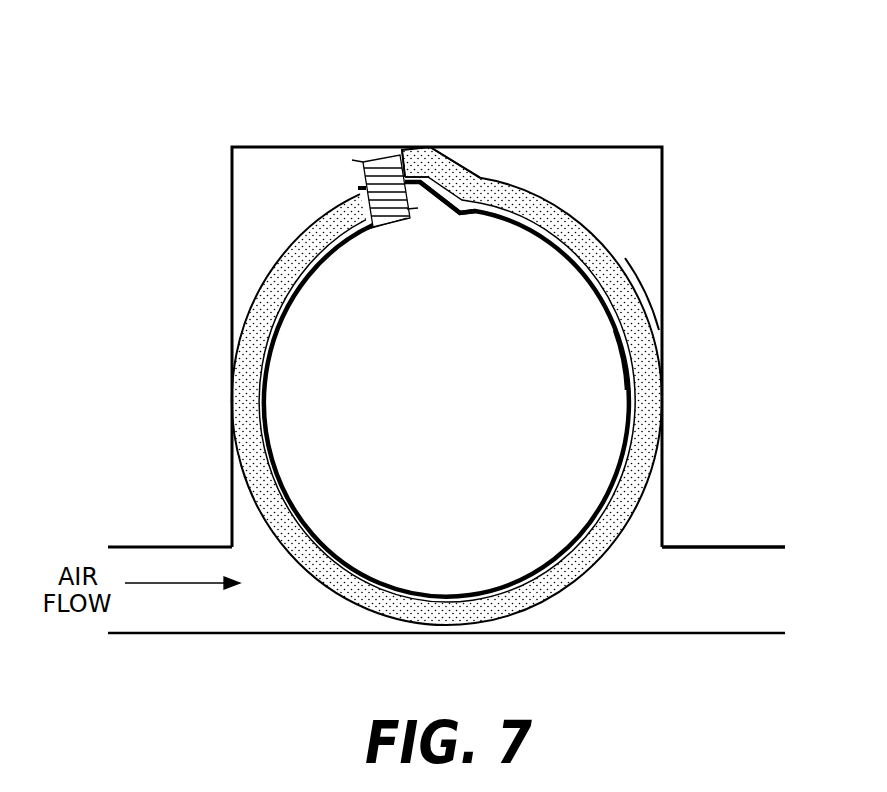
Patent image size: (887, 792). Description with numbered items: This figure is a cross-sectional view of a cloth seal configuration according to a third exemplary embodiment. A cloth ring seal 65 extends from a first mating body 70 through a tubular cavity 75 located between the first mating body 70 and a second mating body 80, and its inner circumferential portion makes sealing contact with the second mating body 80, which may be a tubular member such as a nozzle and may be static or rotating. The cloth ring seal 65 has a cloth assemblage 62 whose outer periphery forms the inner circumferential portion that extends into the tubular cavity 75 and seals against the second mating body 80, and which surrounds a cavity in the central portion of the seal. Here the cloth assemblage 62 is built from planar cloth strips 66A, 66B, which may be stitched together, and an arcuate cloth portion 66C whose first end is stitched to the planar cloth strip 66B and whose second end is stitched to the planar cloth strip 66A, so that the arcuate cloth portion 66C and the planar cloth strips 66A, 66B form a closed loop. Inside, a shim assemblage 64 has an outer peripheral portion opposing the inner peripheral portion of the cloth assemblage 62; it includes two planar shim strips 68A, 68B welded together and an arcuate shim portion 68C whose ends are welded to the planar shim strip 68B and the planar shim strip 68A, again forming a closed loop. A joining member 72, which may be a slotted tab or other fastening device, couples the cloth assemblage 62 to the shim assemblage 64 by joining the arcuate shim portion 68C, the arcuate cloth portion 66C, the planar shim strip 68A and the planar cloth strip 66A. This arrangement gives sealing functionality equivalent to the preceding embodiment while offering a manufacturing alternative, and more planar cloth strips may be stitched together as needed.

The cloth assemblage 62 is at (278, 306).
The shim assemblage 64 is at (266, 409).
The cloth ring seal 65 is at (294, 249).
The planar cloth strip 66A is at (418, 147).
The planar cloth strip 66B is at (466, 180).
The arcuate cloth portion 66C is at (648, 300).
The planar shim strip 68A is at (432, 177).
The planar shim strip 68B is at (465, 210).
The arcuate shim portion 68C is at (628, 366).
The first mating body 70 is at (662, 220).
The joining member 72 is at (366, 150).
The tubular cavity 75 is at (710, 576).
The second mating body 80 is at (166, 634).